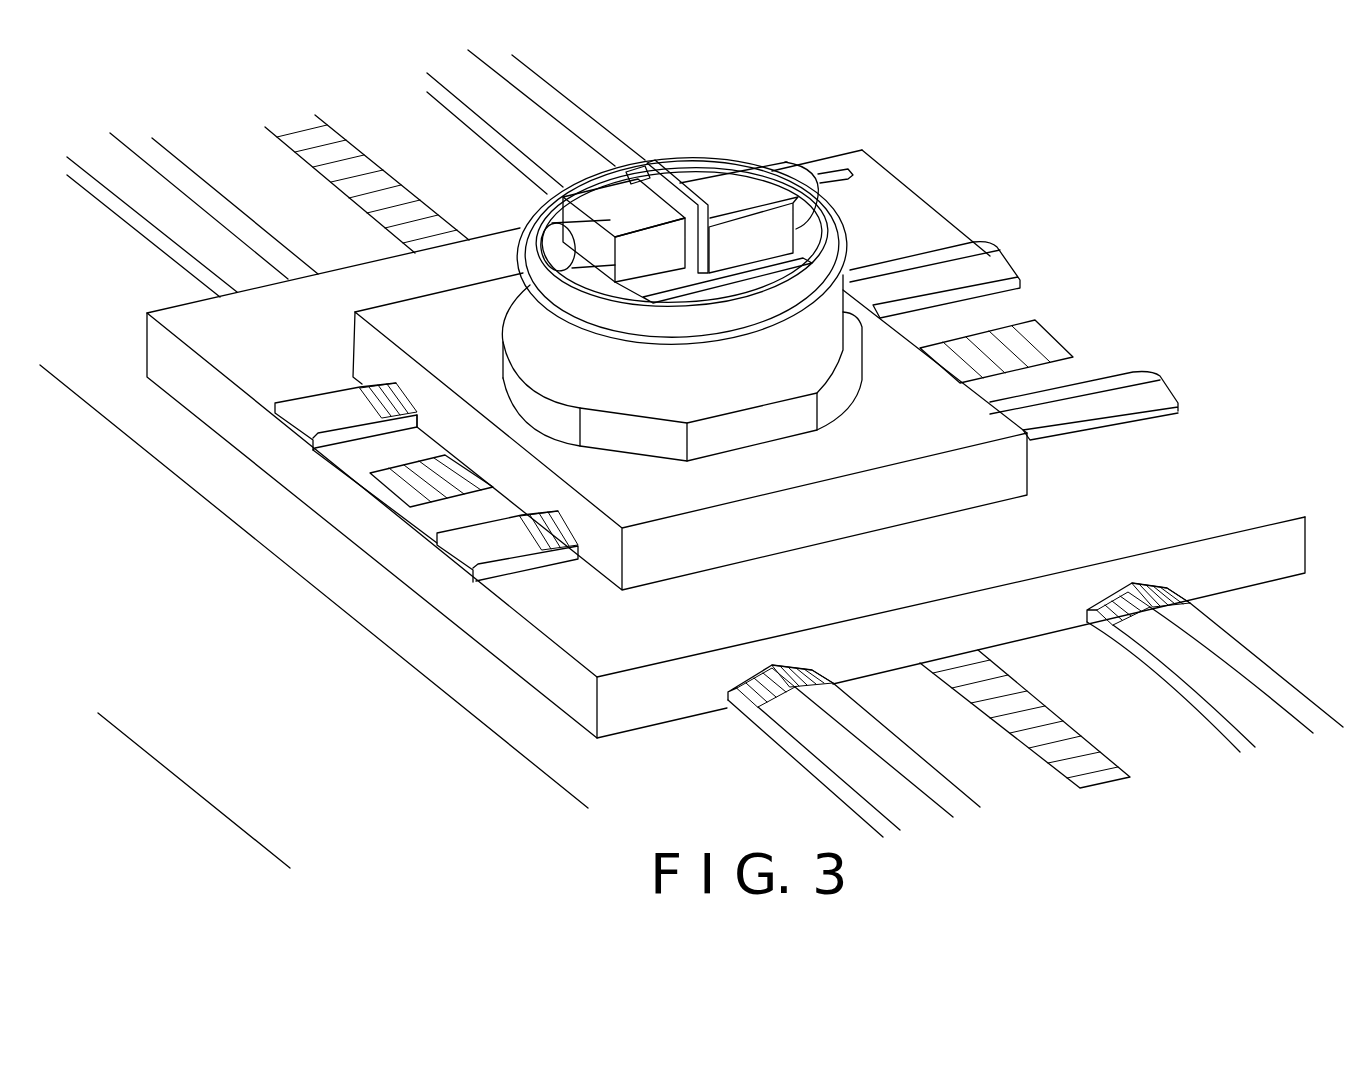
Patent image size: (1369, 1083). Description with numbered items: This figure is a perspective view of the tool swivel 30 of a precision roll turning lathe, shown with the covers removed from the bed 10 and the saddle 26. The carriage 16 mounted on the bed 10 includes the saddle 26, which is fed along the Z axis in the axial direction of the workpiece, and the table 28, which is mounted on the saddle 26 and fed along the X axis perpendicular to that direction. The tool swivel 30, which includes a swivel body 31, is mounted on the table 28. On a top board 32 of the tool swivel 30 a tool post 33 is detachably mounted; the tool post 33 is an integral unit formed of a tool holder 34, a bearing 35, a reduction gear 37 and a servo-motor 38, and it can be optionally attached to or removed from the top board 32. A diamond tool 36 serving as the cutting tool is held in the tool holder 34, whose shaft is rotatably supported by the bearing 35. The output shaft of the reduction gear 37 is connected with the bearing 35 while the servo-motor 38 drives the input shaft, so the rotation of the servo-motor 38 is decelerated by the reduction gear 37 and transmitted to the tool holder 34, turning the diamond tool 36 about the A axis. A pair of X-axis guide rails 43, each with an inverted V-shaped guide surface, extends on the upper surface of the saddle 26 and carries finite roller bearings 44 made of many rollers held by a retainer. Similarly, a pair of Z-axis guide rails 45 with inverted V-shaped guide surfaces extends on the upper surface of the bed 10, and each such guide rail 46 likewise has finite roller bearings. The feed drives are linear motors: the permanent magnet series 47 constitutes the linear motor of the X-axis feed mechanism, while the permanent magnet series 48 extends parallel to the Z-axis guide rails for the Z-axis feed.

The bed 10 is at (320, 560).
The carriage 16 is at (927, 179).
The saddle 26 is at (1202, 458).
The table 28 is at (992, 473).
The tool swivel 30 is at (503, 261).
The swivel body 31 is at (813, 350).
The top board 32 is at (700, 327).
The tool post 33 is at (678, 176).
The tool holder 34 is at (807, 163).
The bearing 35 is at (710, 192).
The diamond tool 36 is at (847, 180).
The reduction gear 37 is at (613, 200).
The servo-motor 38 is at (558, 242).
The X-axis guide rail 43 is at (328, 393).
The finite roller bearings 44 is at (400, 400).
The Z-axis guide rail 45 is at (862, 723).
The guide rail 46 is at (752, 683).
The permanent magnet series 47 is at (447, 467).
The permanent magnet series 48 is at (1043, 708).